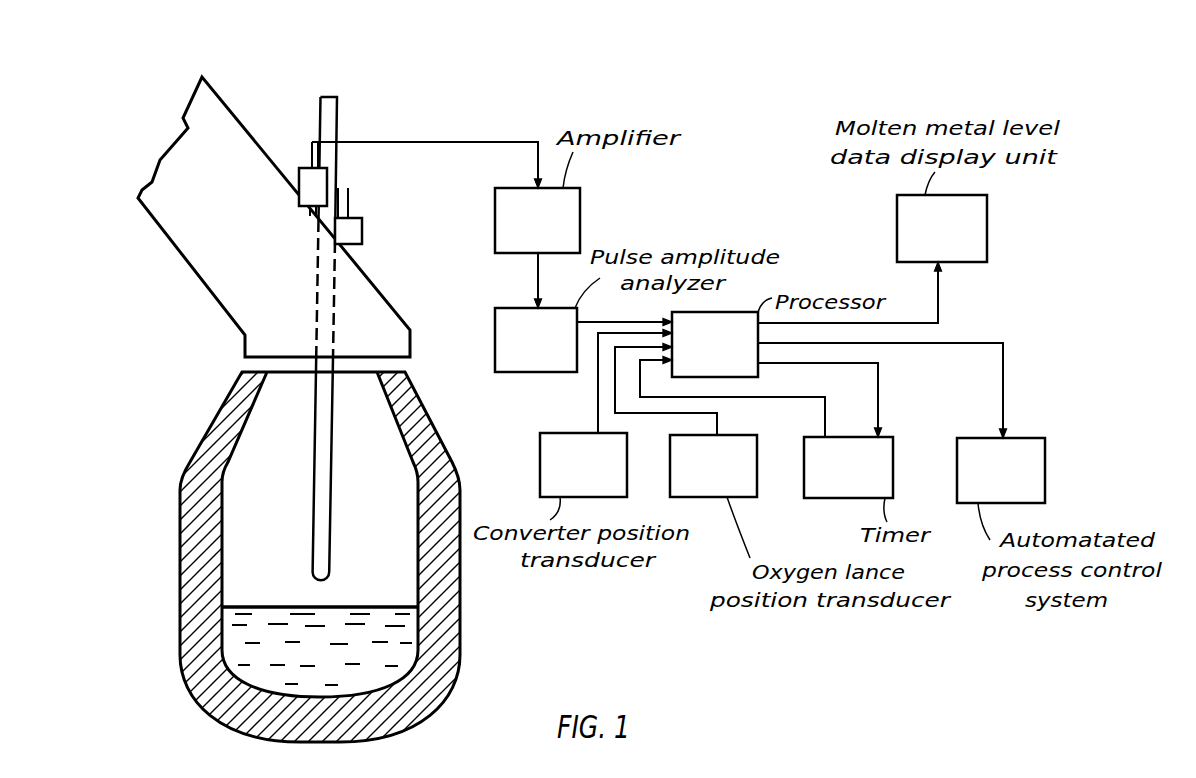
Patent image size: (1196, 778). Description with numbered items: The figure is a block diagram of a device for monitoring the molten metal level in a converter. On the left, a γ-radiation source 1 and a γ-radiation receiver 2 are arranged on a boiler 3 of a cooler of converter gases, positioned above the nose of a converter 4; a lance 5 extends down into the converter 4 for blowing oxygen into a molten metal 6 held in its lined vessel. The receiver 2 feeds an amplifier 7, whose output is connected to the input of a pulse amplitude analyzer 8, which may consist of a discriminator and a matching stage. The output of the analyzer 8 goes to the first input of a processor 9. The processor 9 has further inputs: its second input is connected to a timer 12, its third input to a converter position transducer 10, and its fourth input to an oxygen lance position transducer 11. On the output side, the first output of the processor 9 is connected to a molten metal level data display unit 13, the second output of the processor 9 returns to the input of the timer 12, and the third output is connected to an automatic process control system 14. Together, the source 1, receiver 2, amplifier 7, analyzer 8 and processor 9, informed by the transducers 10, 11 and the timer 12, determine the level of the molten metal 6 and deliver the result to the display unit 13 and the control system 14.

The γ-radiation source 1 is at (358, 233).
The γ-radiation receiver 2 is at (320, 180).
The boiler 3 is at (393, 308).
The converter 4 is at (437, 444).
The lance 5 is at (329, 532).
The molten metal 6 is at (410, 643).
The amplifier 7 is at (537, 220).
The pulse amplitude analyzer 8 is at (536, 340).
The processor 9 is at (715, 344).
The converter position transducer 10 is at (583, 465).
The oxygen lance position transducer 11 is at (713, 466).
The timer 12 is at (848, 467).
The molten metal level data display unit 13 is at (942, 228).
The automatic process control system 14 is at (1001, 470).